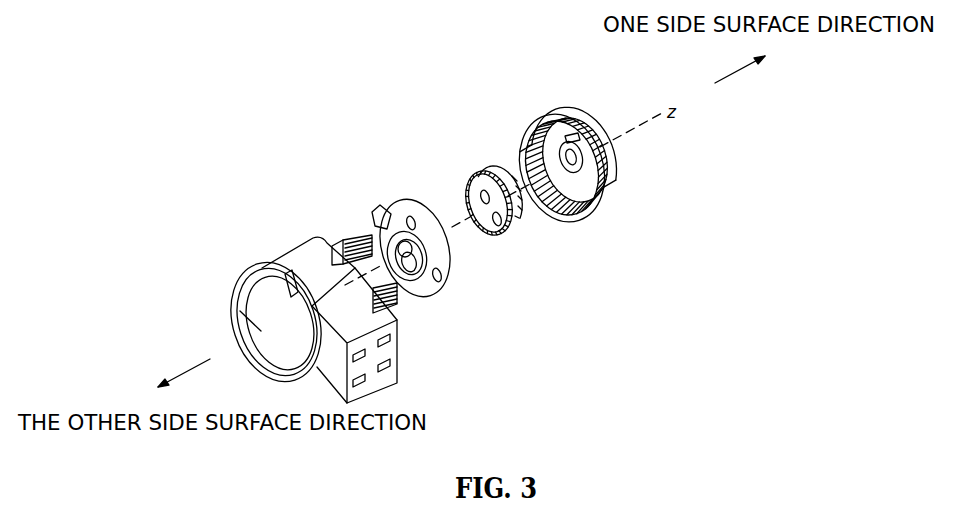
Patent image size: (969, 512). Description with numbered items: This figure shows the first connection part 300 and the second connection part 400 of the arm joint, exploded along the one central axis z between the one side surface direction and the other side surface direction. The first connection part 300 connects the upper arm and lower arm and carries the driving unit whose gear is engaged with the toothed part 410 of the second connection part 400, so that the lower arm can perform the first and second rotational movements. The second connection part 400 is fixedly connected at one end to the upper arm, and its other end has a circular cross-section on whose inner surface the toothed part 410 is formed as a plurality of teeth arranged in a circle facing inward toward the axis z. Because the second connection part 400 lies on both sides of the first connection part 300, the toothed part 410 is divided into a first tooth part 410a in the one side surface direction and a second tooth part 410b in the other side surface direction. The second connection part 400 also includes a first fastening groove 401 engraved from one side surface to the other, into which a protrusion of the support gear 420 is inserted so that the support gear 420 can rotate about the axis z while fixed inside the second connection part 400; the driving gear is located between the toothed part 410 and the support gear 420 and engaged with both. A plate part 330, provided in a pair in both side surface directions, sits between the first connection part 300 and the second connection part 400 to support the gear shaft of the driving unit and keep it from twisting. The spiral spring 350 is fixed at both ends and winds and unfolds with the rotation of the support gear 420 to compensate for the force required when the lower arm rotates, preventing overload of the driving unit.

The first connection part 300 is at (298, 256).
The plate part 330 is at (400, 196).
The spiral spring 350 is at (377, 213).
The second connection part 400 is at (601, 212).
The first fastening groove 401 is at (576, 136).
The toothed part 410 is at (570, 215).
The first tooth part 410a is at (562, 186).
The second tooth part 410b is at (230, 304).
The support gear 420 is at (511, 238).